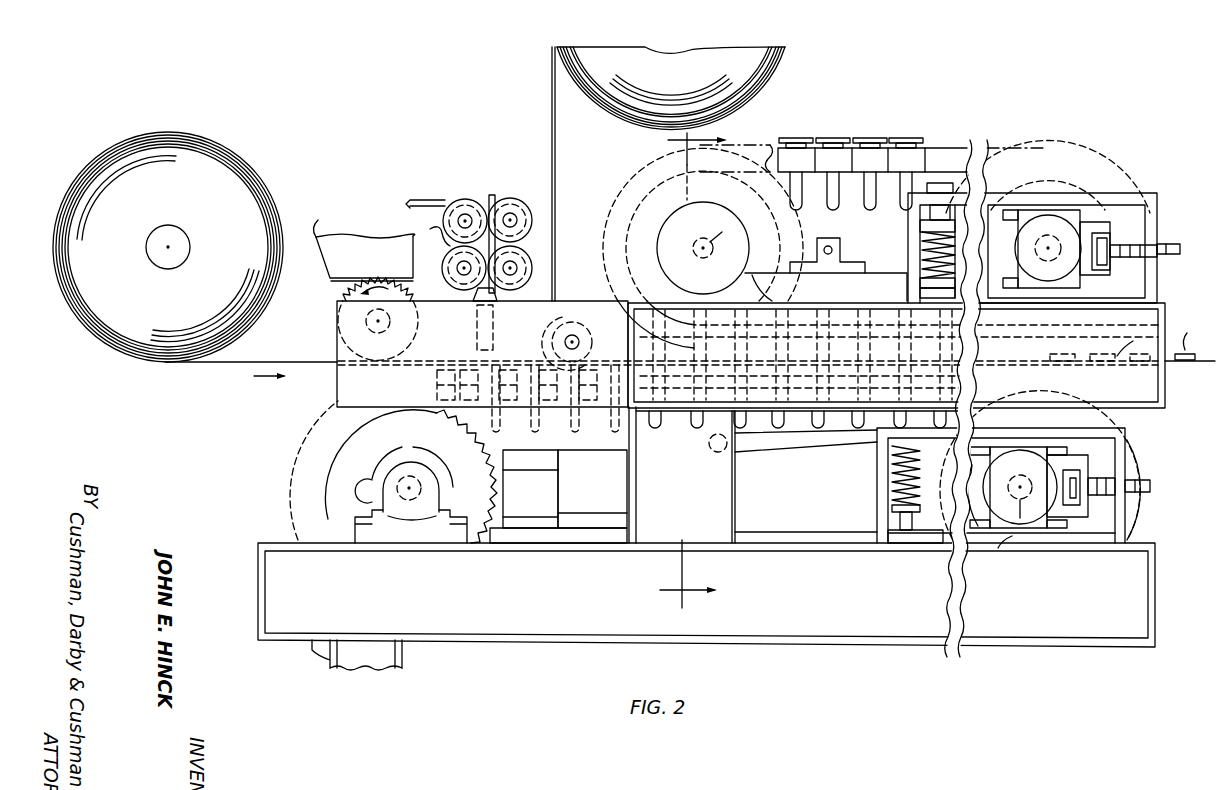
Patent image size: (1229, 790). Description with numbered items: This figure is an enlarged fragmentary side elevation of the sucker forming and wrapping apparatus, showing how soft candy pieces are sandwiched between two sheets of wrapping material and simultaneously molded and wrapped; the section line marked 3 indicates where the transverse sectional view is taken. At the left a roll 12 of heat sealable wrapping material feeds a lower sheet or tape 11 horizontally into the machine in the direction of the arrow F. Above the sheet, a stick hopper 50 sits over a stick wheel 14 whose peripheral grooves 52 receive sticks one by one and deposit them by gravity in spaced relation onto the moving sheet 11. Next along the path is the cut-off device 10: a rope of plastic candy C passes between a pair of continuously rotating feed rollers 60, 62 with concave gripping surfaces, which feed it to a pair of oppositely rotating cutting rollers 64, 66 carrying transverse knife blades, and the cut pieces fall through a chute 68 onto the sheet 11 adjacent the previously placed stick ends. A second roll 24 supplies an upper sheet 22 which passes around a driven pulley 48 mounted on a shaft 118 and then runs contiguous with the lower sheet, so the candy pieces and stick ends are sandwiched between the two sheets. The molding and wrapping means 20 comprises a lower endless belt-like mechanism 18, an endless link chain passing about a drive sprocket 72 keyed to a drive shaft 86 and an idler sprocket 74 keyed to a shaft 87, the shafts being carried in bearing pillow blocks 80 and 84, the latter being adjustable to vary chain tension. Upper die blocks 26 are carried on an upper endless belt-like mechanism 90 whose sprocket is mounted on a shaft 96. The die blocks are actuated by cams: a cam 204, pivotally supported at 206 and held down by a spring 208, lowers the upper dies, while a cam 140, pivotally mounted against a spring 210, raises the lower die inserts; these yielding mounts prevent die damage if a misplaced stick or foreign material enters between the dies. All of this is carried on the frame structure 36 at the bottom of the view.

The cut-off device 10 is at (504, 176).
The sheet or tape of wrapping material 11 is at (270, 357).
The roll of wrapping material 12 is at (252, 168).
The stick wheel 14 is at (339, 294).
The lower endless belt-like mechanism 18 is at (291, 489).
The molding and wrapping means 20 is at (954, 130).
The second sheet or tape of wrapping material 22 is at (558, 168).
The roll of wrapping material 24 is at (770, 80).
The upper die blocks 26 is at (830, 137).
The frame structure 36 is at (913, 647).
The pulley or roller 48 is at (627, 332).
The stick hopper 50 is at (314, 234).
The grooves 52 is at (389, 318).
The feed roller 60 is at (519, 198).
The feed roller 62 is at (460, 199).
The cutting roller 64 is at (534, 266).
The cutting roller 66 is at (428, 229).
The chute 68 is at (497, 322).
The sprocket 72 is at (495, 489).
The idler sprocket 74 is at (893, 492).
The bearing pillow block 80 is at (403, 495).
The bearing pillow block 84 is at (985, 497).
The drive shaft 86 is at (410, 484).
The shaft 87 is at (998, 548).
The upper endless belt-like mechanism 90 is at (1036, 147).
The shaft 96 is at (724, 232).
The shaft 118 is at (582, 340).
The cam 140 is at (805, 452).
The cam 204 is at (877, 271).
The pivot 206 is at (832, 247).
The spring / pivot 208 is at (958, 250).
The spring 210 is at (893, 500).
The rope candy C is at (423, 198).
The arrow F / direction of strip movement F is at (717, 352).
The section line 3- 3 is at (681, 370).